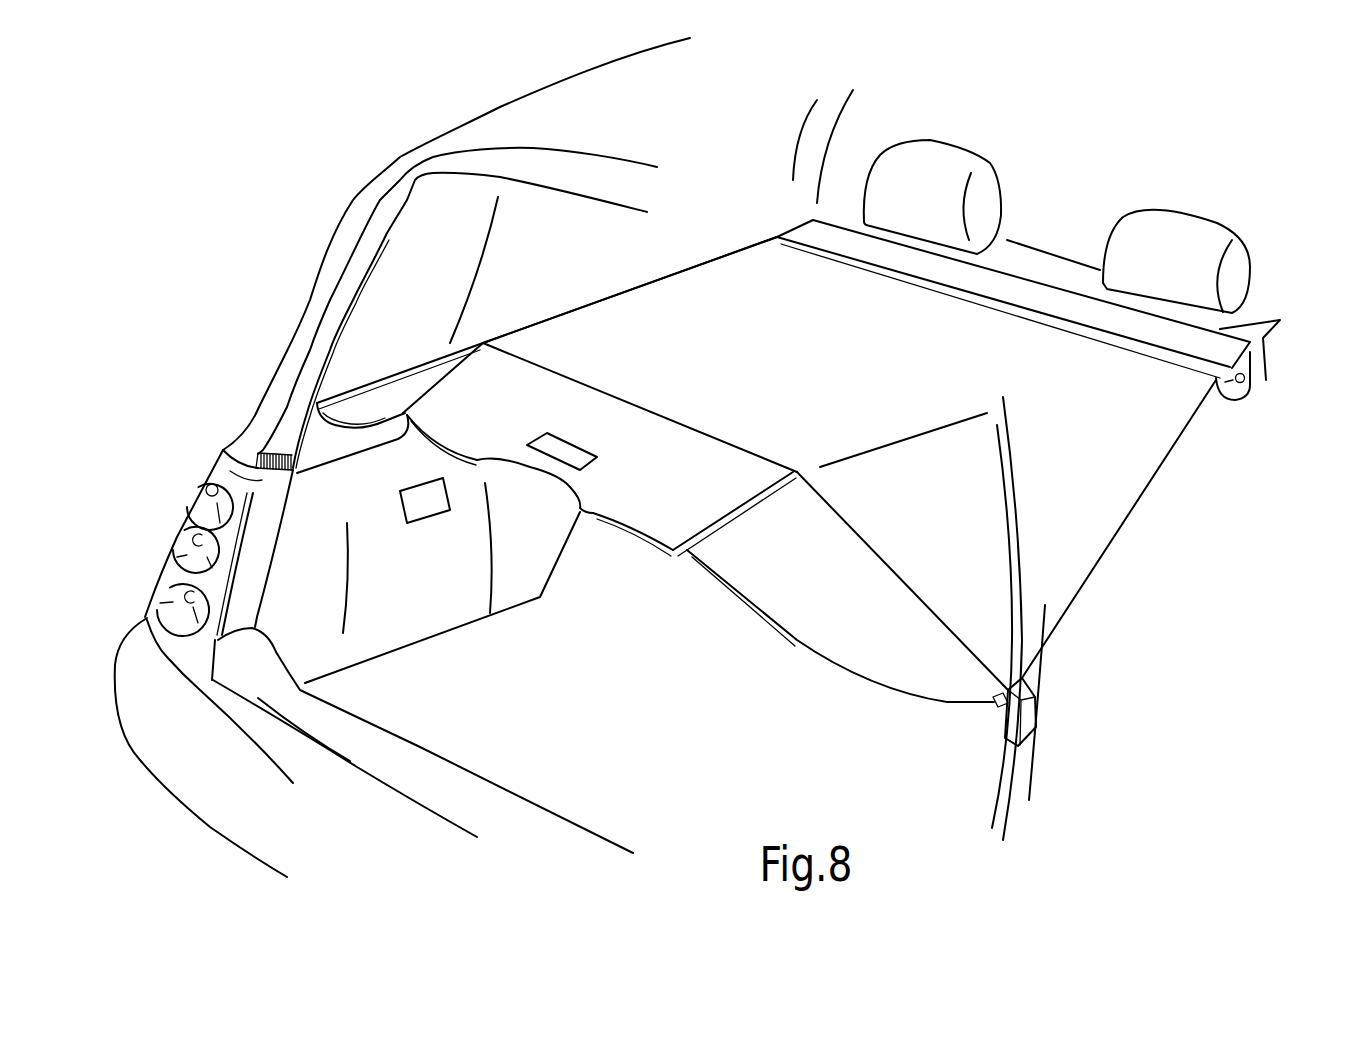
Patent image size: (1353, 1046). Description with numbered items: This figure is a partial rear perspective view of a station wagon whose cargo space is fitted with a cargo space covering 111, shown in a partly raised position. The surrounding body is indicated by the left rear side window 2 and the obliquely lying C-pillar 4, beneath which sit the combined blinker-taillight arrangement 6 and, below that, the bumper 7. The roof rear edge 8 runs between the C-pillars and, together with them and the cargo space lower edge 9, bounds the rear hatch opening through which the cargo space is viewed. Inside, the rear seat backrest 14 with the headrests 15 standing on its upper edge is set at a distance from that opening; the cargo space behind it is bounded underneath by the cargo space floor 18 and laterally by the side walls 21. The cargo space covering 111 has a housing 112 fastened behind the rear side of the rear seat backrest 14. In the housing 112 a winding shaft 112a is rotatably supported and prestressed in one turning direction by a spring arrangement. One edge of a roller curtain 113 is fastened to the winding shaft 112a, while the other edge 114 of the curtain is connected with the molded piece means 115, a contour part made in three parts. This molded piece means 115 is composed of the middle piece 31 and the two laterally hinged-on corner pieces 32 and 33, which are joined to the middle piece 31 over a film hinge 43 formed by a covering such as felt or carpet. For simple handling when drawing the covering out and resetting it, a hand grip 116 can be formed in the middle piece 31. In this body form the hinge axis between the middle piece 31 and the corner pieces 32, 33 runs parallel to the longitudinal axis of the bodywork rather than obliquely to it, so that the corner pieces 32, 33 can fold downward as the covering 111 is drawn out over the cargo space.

The rear side window 2 is at (444, 278).
The C-pillar 4 is at (303, 317).
The combined blinker-taillight arrangement 6 is at (203, 507).
The bumper 7 is at (241, 791).
The roof rear edge 8 is at (590, 173).
The cargo space lower edge 9 is at (443, 783).
The rear seat backrest 14 is at (1257, 327).
The headrests 15 is at (930, 168).
The cargo space floor 18 is at (567, 761).
The side walls 21 is at (383, 585).
The middle piece 31 is at (623, 465).
The corner piece 32 is at (359, 418).
The corner piece 33 is at (819, 605).
The film hinge 43 is at (463, 395).
The cargo space covering 111 is at (657, 258).
The housing 112 is at (1017, 290).
The winding shaft 112a is at (1237, 393).
The roller curtain 113 is at (809, 358).
The other edge 114 is at (693, 420).
The molded piece means 115 is at (633, 560).
The hand grip 116 is at (563, 448).